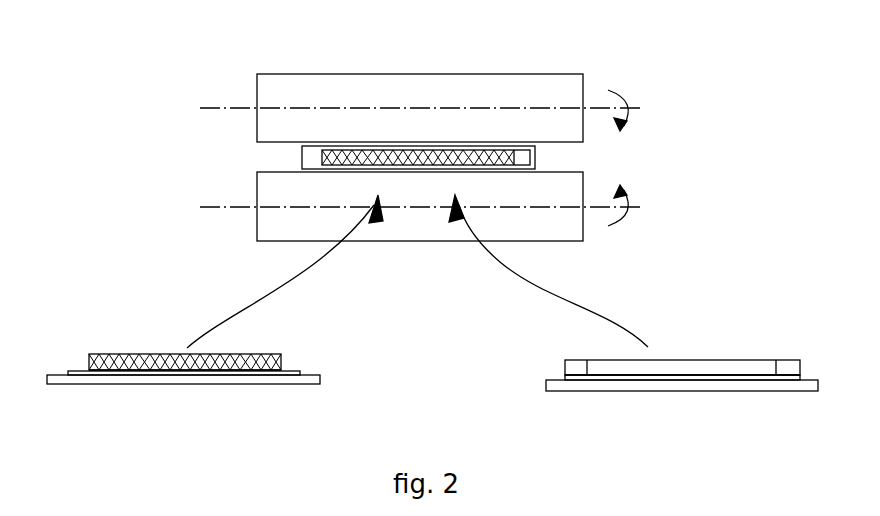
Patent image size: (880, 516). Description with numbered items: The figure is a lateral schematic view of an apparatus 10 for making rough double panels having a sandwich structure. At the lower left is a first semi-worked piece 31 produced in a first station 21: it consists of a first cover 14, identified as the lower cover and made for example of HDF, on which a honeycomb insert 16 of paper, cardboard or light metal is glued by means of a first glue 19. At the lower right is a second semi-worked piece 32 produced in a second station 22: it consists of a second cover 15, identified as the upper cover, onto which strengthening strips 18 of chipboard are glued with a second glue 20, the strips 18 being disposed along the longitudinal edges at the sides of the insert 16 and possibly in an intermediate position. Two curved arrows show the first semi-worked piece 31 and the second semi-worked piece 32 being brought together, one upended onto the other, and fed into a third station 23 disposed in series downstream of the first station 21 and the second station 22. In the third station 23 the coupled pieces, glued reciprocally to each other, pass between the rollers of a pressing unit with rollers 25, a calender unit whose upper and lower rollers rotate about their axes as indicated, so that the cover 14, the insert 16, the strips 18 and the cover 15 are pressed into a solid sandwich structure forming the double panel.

The apparatus 10 is at (770, 191).
The first cover 14 is at (537, 165).
The second cover 15 is at (536, 149).
The honeycomb insert 16 is at (303, 154).
The strengthening strip 18 is at (303, 160).
The first glue 19 is at (243, 372).
The second glue 20 is at (618, 378).
The first station 21 is at (155, 386).
The second station 22 is at (680, 390).
The third station 23 is at (658, 74).
The pressing unit with rollers 25 is at (270, 87).
The first semi-worked piece 31 is at (298, 363).
The second semi-worked piece 32 is at (762, 358).